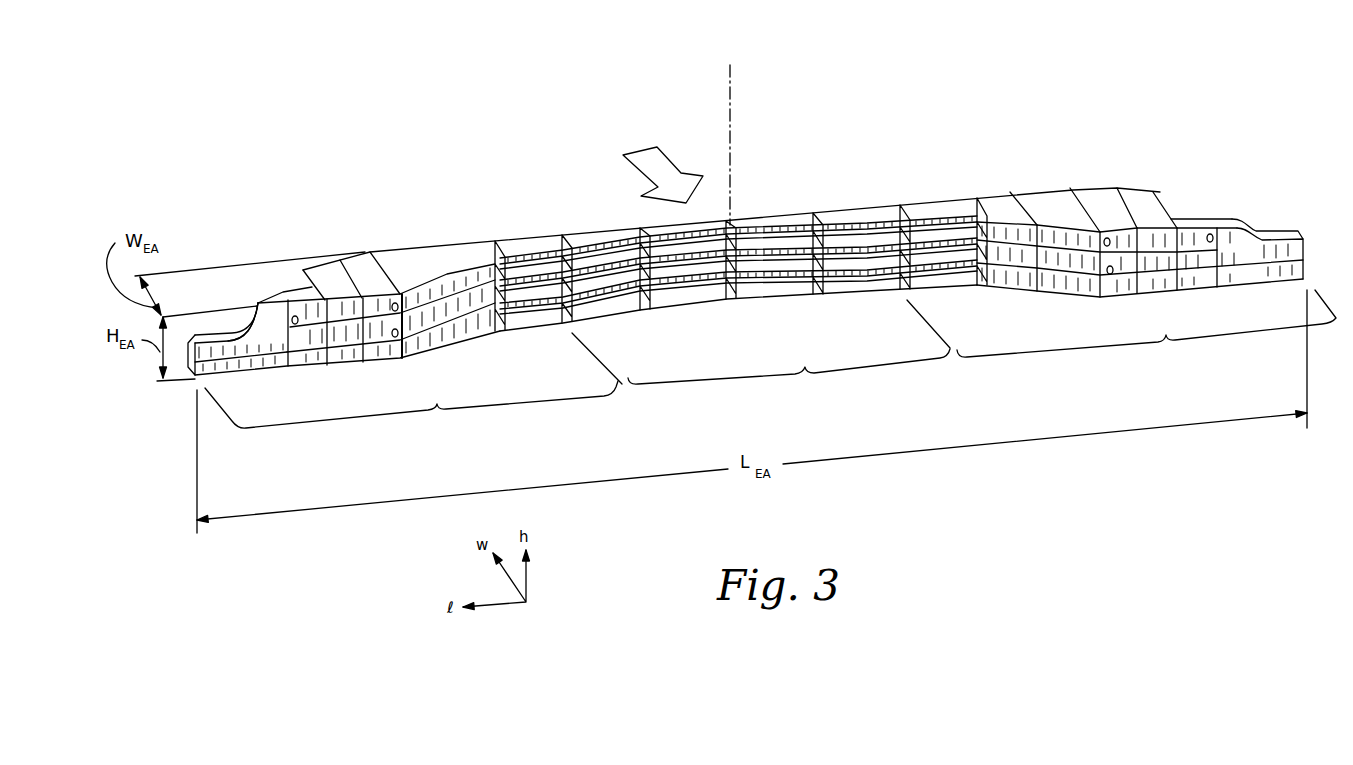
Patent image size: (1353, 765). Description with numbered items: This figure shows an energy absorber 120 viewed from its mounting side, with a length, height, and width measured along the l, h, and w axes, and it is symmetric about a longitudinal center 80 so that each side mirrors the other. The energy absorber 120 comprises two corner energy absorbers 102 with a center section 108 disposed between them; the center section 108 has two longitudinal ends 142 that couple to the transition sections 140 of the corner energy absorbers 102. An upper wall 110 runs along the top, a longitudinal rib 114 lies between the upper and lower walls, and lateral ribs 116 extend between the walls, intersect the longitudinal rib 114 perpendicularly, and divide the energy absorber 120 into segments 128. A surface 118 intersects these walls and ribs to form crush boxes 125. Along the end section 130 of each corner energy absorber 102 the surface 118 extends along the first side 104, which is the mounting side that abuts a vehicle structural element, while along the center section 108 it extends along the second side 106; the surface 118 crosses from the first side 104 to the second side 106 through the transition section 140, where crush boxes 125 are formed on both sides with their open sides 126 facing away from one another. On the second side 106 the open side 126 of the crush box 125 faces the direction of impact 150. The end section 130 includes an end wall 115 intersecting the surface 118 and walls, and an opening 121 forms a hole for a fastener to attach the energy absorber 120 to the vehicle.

The longitudinal center 80 is at (728, 97).
The corner energy absorber 102 is at (770, 367).
The first side 104 is at (313, 378).
The second side 106 is at (413, 237).
The center section 108 is at (789, 356).
The upper wall 110 is at (368, 268).
The longitudinal rib 114 is at (767, 268).
The end wall 115 is at (190, 362).
The lateral rib 116 is at (725, 297).
The surface 118 is at (1012, 258).
The energy absorber 120 is at (425, 120).
The opening 121 is at (1207, 237).
The crush box 125 is at (786, 293).
The open side 126 is at (859, 292).
The segment 128 is at (1140, 200).
The end section 130 is at (258, 288).
The transition section 140 is at (517, 237).
The longitudinal end 142 is at (593, 225).
The direction of impact 150 is at (657, 163).